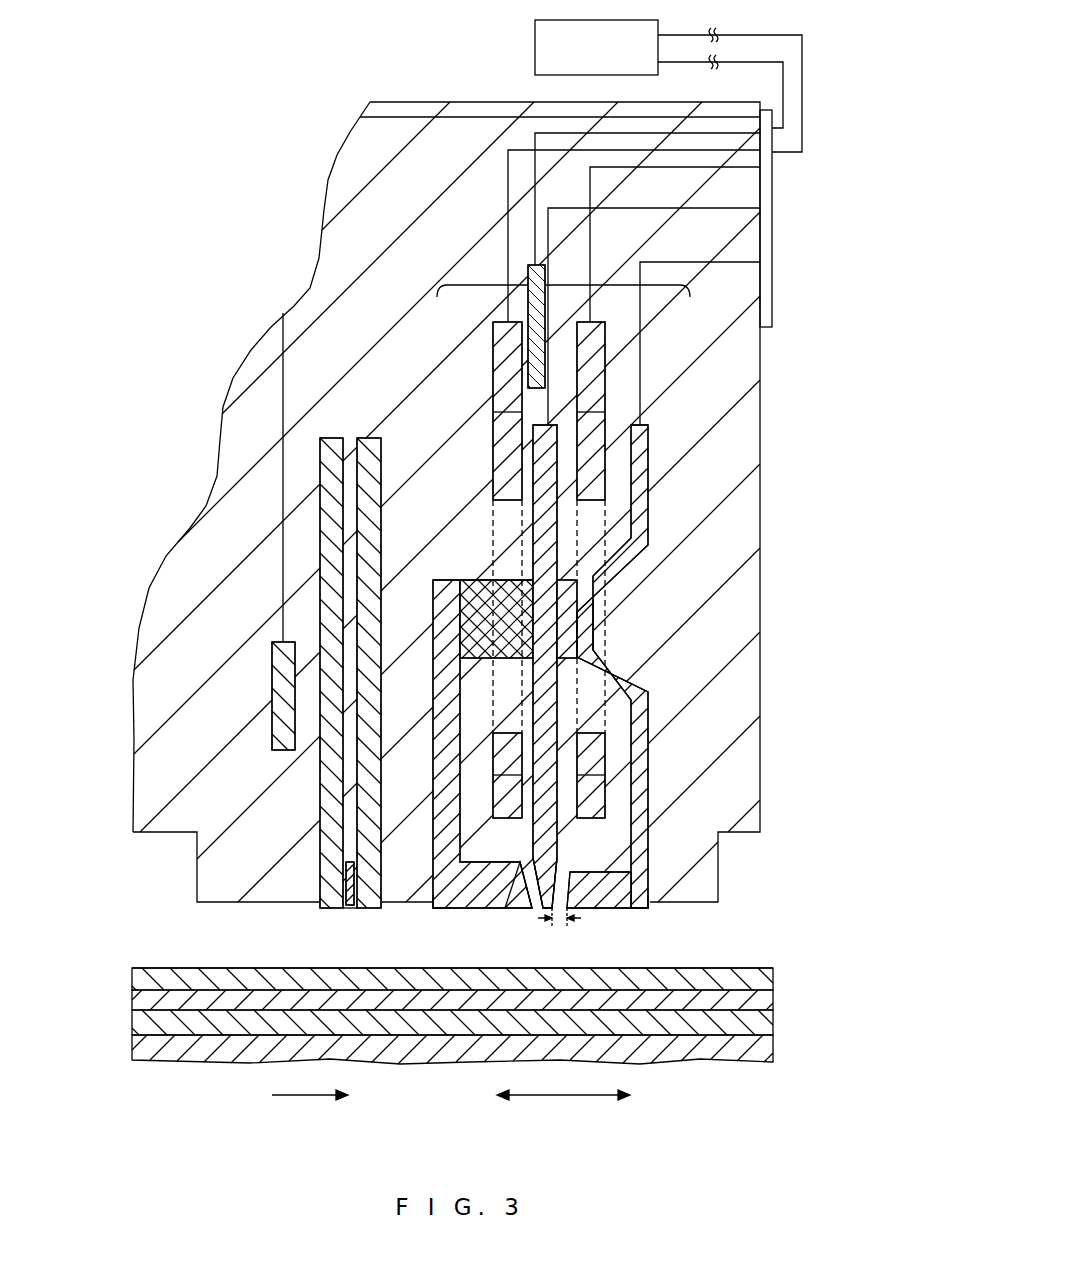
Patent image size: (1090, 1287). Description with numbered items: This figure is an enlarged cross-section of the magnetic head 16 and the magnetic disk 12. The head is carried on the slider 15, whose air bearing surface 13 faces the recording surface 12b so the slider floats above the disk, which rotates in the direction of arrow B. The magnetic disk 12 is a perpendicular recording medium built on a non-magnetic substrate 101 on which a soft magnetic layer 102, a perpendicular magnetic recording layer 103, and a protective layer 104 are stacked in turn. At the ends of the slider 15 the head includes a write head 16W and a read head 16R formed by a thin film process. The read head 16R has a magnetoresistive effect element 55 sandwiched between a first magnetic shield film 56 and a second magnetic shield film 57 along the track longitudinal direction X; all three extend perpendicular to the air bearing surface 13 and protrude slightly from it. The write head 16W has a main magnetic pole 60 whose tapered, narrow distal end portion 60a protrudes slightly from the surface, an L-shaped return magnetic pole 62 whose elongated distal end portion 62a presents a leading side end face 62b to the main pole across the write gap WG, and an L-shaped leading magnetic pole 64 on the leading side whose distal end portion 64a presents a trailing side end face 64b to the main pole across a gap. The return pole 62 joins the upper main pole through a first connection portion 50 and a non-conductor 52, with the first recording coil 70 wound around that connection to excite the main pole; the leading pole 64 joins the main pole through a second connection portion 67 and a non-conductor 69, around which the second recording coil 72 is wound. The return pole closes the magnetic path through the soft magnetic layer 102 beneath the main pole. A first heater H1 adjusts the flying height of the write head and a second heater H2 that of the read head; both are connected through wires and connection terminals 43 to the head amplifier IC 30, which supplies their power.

The magnetic disk 12 is at (487, 1053).
The recording surface 12b is at (735, 1022).
The air bearing surface 13 is at (165, 833).
The slider 15 is at (162, 754).
The magnetic head 16 is at (270, 234).
The read head 16R is at (230, 645).
The write head 16W is at (560, 287).
The head amplifier IC 30 is at (534, 52).
The connection terminal 43 is at (774, 248).
The first connection portion 50 is at (587, 633).
The non-conductor 52 is at (570, 600).
The magnetoresistive effect element 55 is at (346, 880).
The first magnetic shield film 56 is at (327, 603).
The second magnetic shield film 57 is at (363, 553).
The main magnetic pole 60 is at (637, 689).
The distal end portion 60a is at (539, 910).
The return magnetic pole 62 is at (697, 689).
The distal end portion 62a is at (605, 895).
The leading side end face 62b is at (650, 907).
The leading magnetic pole 64 is at (447, 767).
The distal end portion 64a is at (460, 897).
The trailing side end face 64b is at (435, 908).
The second connection portion 67 is at (485, 593).
The non-conductor 69 is at (458, 584).
The first recording coil 70 is at (597, 433).
The second recording coil 72 is at (508, 450).
The substrate 101 is at (758, 1050).
The soft magnetic layer 102 is at (758, 1020).
The perpendicular magnetic recording layer 103 is at (767, 1003).
The protective layer 104 is at (768, 977).
The first heater H1 is at (528, 308).
The second heater H2 is at (272, 688).
The write gap WG is at (570, 934).
The longitudinal direction X is at (563, 1111).
The arrow B is at (310, 1112).